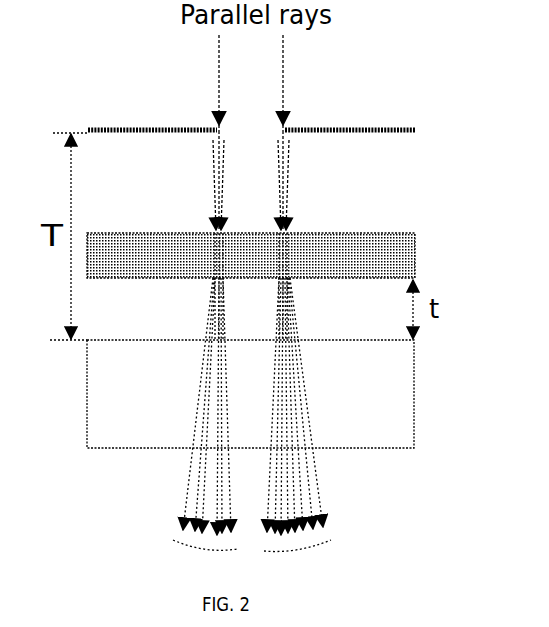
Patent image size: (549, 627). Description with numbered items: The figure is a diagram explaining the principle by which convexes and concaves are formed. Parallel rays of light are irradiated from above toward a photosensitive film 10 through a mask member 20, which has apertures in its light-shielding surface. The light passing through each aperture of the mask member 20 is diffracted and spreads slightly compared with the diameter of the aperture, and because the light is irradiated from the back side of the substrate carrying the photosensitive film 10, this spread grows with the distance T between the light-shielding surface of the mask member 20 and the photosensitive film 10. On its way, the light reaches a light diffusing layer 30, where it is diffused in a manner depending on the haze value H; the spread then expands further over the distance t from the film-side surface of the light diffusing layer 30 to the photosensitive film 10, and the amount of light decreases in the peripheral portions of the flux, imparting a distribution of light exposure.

The photosensitive film 10 is at (415, 392).
The mask member 20 is at (415, 130).
The light diffusing layer 30 is at (416, 256).